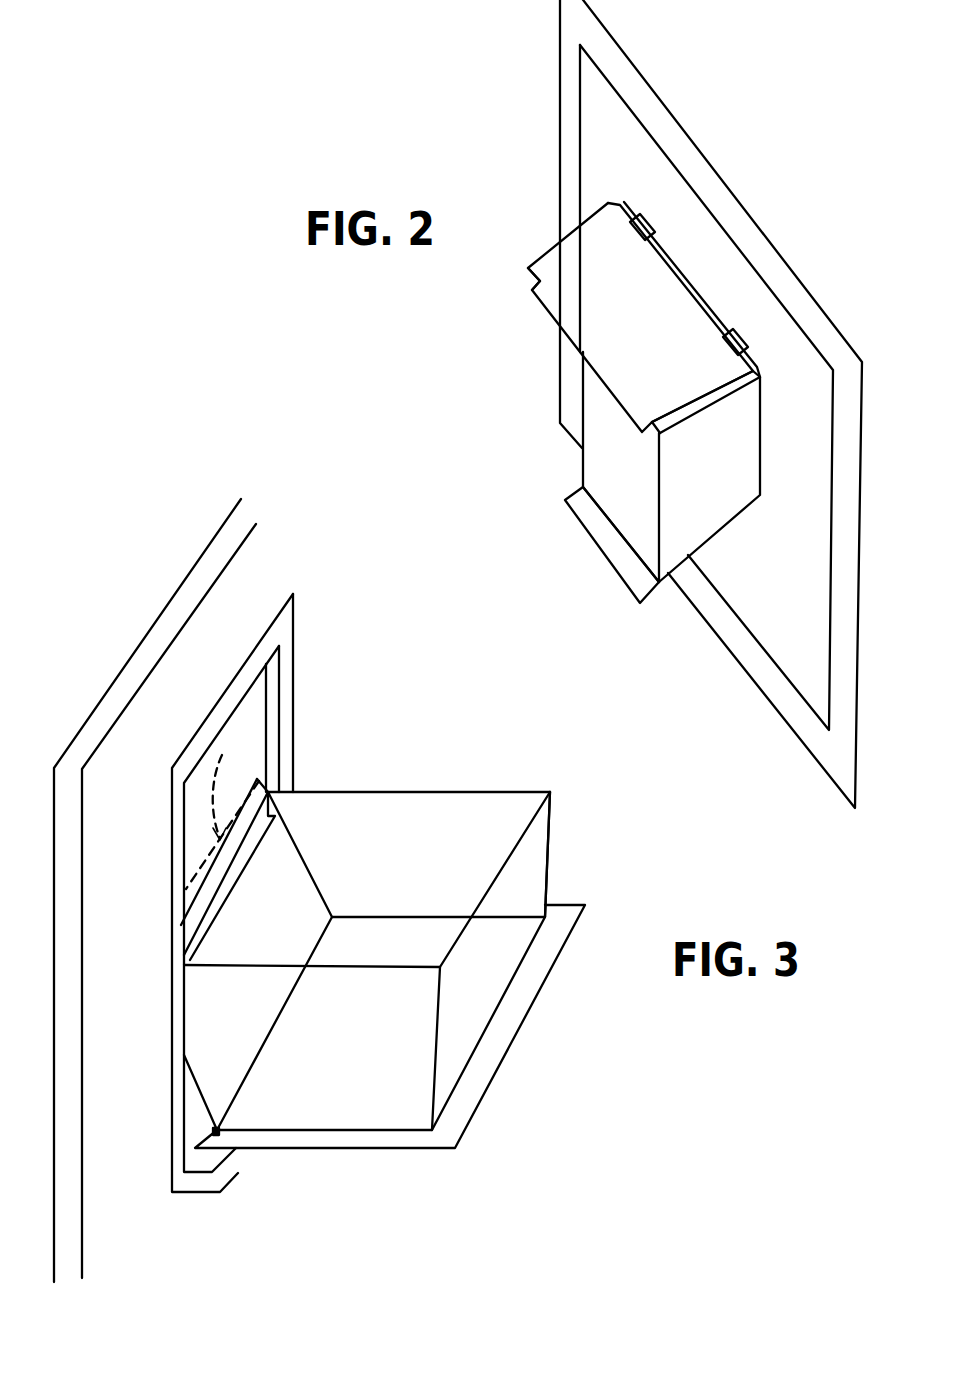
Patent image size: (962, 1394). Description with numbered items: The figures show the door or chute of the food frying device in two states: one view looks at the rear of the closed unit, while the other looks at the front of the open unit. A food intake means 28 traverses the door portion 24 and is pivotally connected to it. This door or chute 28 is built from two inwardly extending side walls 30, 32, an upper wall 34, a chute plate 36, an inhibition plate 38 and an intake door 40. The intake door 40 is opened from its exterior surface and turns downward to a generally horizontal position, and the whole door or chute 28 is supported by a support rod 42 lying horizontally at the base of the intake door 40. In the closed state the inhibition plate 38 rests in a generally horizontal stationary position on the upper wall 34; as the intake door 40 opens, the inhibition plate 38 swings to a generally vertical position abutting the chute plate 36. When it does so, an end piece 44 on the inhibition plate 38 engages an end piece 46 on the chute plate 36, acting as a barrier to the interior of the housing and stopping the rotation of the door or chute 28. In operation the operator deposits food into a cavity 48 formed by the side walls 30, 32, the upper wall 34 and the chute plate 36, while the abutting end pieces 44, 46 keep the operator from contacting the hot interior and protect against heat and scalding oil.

In FIG. 2, the door portion 24 is at (744, 590).
In FIG. 3, the door portion 24 is at (100, 986).
In FIG. 2, the food intake means 28 is at (592, 571).
In FIG. 3, the food intake means 28 is at (514, 1072).
In FIG. 2, the side wall 30 is at (710, 502).
In FIG. 3, the side wall 30 is at (305, 1082).
In FIG. 2, the side wall 32 is at (598, 425).
In FIG. 3, the side wall 32 is at (460, 833).
In FIG. 2, the upper wall 34 is at (745, 385).
In FIG. 3, the upper wall 34 is at (493, 935).
In FIG. 2, the chute plate 36 is at (628, 517).
In FIG. 3, the chute plate 36 is at (233, 1008).
In FIG. 2, the inhibition plate 38 is at (642, 317).
In FIG. 3, the inhibition plate 38 is at (196, 830).
In FIG. 3, the intake door 40 is at (478, 1080).
In FIG. 3, the support rod 42 is at (218, 1136).
In FIG. 2, the end piece 44 is at (530, 286).
In FIG. 3, the end piece 44 is at (199, 902).
In FIG. 2, the end piece 46 is at (627, 557).
In FIG. 3, the end piece 46 is at (230, 783).
In FIG. 2, the cavity 48 is at (637, 480).
In FIG. 3, the cavity 48 is at (377, 845).